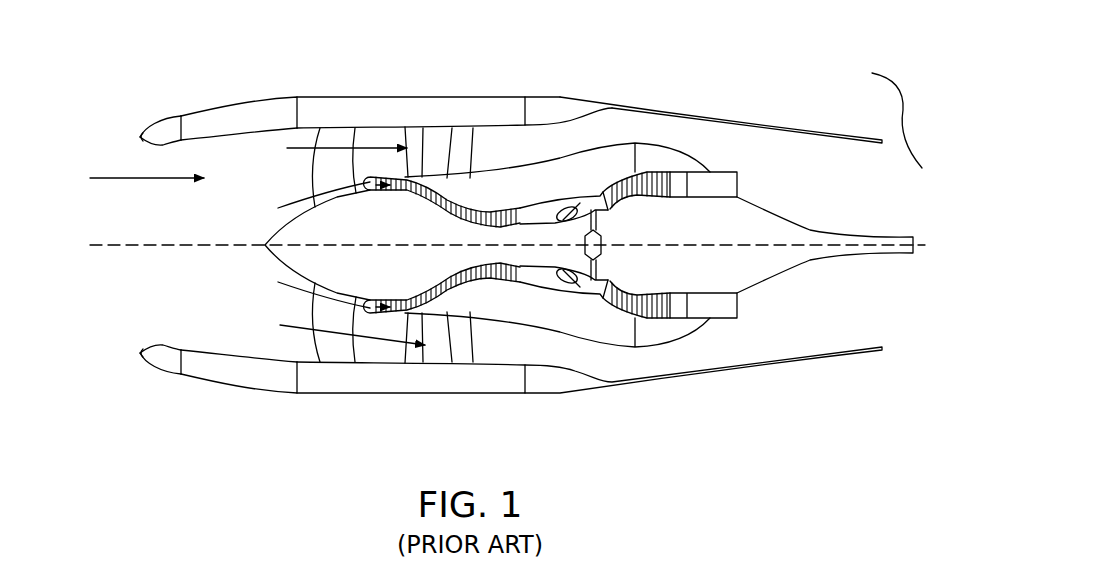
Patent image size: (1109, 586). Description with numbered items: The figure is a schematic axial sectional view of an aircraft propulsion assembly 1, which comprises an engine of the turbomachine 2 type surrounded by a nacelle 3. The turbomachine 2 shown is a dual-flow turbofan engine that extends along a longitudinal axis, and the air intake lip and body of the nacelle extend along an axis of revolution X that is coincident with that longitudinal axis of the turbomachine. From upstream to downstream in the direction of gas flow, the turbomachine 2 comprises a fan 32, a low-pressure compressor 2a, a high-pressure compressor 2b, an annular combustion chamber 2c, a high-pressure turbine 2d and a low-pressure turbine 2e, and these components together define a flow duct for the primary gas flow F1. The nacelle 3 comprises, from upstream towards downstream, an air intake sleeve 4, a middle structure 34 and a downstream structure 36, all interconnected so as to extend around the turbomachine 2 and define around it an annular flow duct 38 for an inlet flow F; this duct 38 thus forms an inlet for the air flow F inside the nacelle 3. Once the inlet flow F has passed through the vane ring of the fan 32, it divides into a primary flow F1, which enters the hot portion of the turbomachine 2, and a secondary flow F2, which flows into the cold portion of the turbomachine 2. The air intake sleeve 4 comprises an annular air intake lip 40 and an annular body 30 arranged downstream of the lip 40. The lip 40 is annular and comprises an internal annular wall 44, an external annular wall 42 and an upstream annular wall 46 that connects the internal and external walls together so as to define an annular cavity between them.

The propulsion assembly 1 is at (920, 97).
The turbomachine 2 is at (826, 217).
The low-pressure compressor 2a is at (400, 350).
The high-pressure compressor 2b is at (510, 283).
The annular combustion chamber 2c is at (563, 290).
The high-pressure turbine 2d is at (603, 295).
The low-pressure turbine 2e is at (660, 320).
The nacelle 3 is at (812, 119).
The air intake sleeve 4 is at (207, 67).
The annular body 30 is at (257, 95).
The fan 32 is at (335, 352).
The middle structure 34 is at (440, 93).
The downstream structure 36 is at (729, 110).
The annular flow duct 38 is at (206, 225).
The air intake lip 40 is at (144, 124).
The external annular wall 42 is at (168, 118).
The internal annular wall 44 is at (163, 145).
The upstream annular wall 46 is at (138, 137).
The inlet flow F is at (125, 178).
The primary flow F1 is at (300, 202).
The secondary flow F2 is at (298, 148).
The axis of revolution X is at (117, 246).